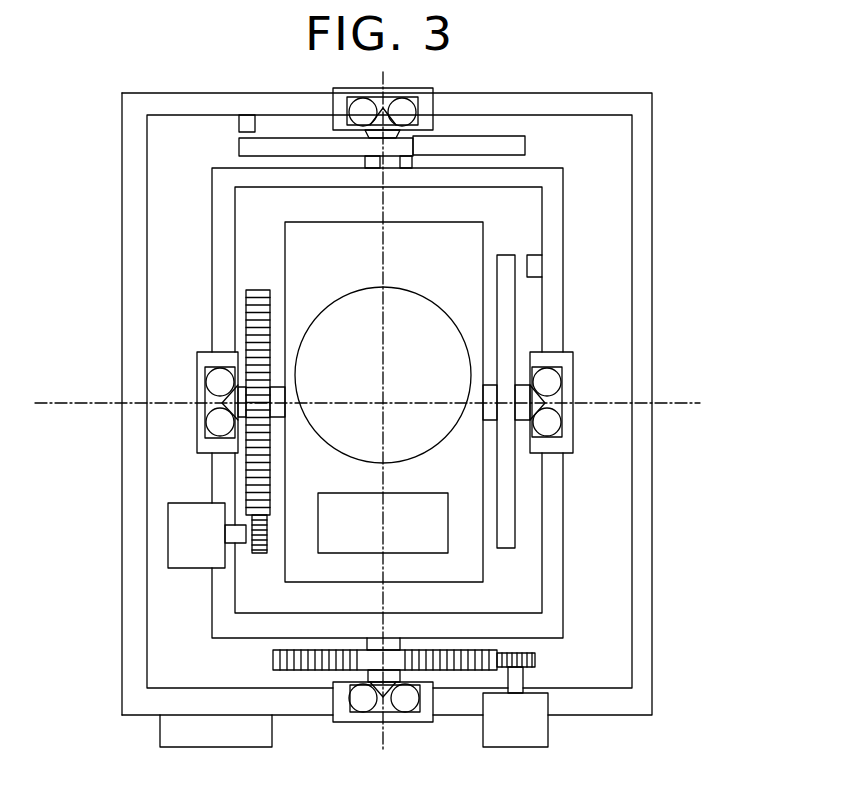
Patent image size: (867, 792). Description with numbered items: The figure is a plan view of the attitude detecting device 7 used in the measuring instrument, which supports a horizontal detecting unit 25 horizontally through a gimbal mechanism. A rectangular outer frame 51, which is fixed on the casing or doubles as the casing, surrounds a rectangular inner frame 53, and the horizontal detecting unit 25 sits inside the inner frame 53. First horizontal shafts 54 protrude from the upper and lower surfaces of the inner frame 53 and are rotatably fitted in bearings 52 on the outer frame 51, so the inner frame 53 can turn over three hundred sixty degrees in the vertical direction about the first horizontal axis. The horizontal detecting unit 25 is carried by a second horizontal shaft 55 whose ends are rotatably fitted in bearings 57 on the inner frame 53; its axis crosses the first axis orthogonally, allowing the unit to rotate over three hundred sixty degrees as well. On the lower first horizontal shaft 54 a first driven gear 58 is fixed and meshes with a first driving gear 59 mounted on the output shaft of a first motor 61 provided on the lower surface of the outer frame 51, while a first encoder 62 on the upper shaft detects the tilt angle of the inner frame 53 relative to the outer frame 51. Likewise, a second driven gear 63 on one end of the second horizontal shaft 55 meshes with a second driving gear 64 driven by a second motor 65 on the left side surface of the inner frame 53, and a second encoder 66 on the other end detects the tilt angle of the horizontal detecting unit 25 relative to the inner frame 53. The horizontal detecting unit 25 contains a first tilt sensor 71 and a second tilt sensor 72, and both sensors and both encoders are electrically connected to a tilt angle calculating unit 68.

The attitude detecting device 7 is at (184, 88).
The horizontal detecting unit 25 is at (473, 222).
The outer frame 51 is at (580, 91).
The bearing 52 is at (415, 89).
The inner frame 53 is at (548, 168).
The first horizontal shaft 54 is at (413, 150).
The second horizontal shaft 55 is at (523, 387).
The bearing 57 is at (197, 362).
The first driven gear 58 is at (272, 652).
The first driving gear 59 is at (537, 660).
The first motor 61 is at (548, 728).
The first encoder 62 is at (270, 126).
The second driven gear 63 is at (260, 290).
The second driving gear 64 is at (262, 553).
The second motor 65 is at (180, 570).
The second encoder 66 is at (530, 242).
The tilt angle calculating unit 68 is at (157, 740).
The first tilt sensor 71 is at (417, 293).
The second tilt sensor 72 is at (423, 493).